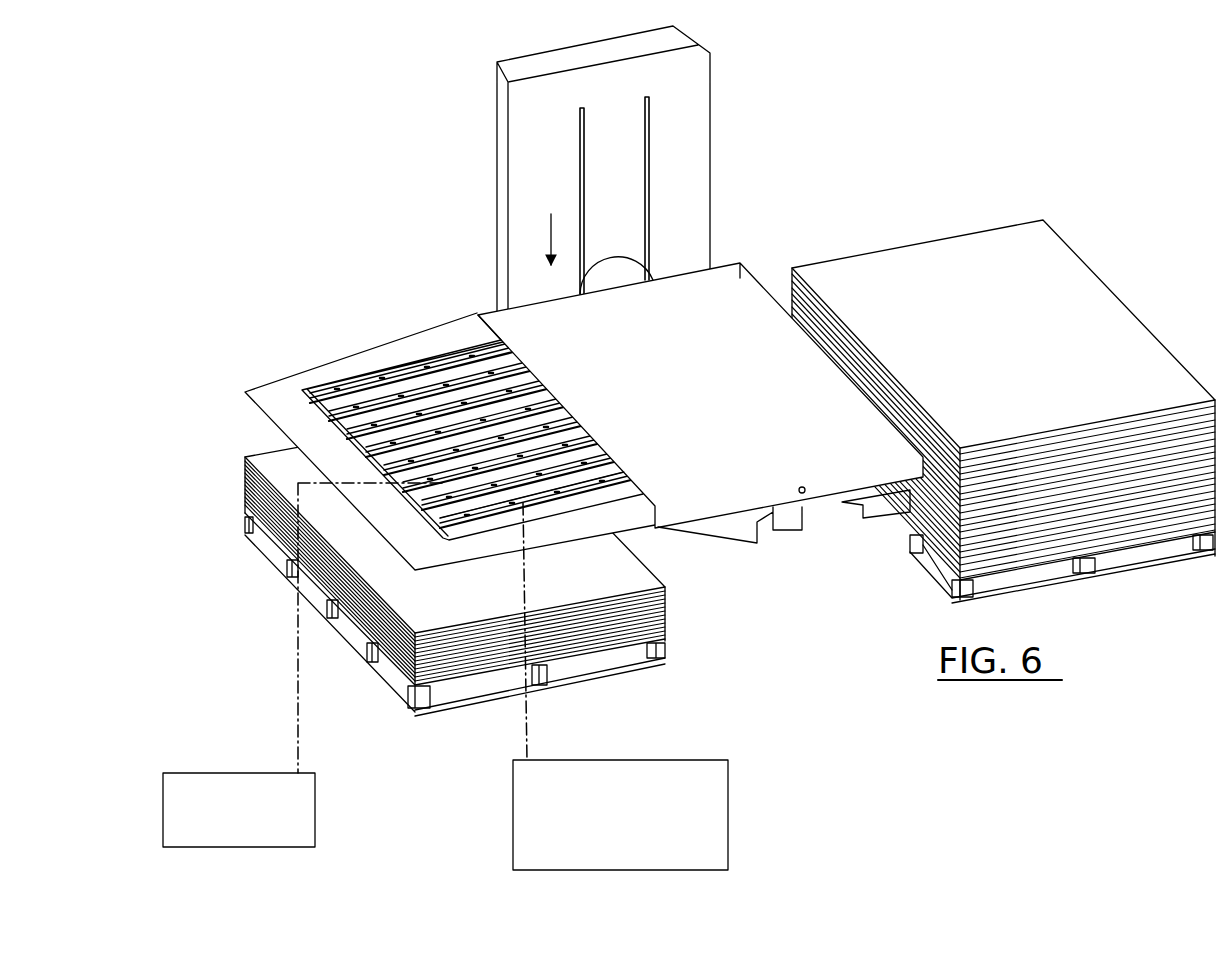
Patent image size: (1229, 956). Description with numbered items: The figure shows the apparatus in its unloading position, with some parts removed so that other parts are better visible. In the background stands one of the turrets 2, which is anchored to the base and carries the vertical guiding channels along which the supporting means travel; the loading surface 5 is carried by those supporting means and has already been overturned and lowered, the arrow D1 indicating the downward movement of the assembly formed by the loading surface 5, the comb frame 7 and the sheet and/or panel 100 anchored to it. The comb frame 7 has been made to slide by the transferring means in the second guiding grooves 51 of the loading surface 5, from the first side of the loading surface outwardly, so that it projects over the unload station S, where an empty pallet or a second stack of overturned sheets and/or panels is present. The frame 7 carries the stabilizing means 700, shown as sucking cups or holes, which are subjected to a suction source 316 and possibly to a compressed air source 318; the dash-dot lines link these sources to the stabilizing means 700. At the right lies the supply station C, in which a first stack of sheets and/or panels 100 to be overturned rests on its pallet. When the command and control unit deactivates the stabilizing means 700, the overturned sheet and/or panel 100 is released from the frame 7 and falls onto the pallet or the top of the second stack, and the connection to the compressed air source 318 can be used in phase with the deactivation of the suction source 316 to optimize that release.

The turret 2 is at (682, 115).
The supply station C is at (952, 168).
The unload station S is at (448, 459).
The sheet and/or panel 100 is at (273, 418).
The stabilizing means 700 is at (403, 382).
The loading surface 5 is at (722, 307).
The second guiding groove 51 is at (490, 350).
The comb frame 7 is at (561, 514).
The downward movement direction D1 is at (536, 235).
The suction source 316 is at (202, 772).
The compressed air source 318 is at (685, 758).